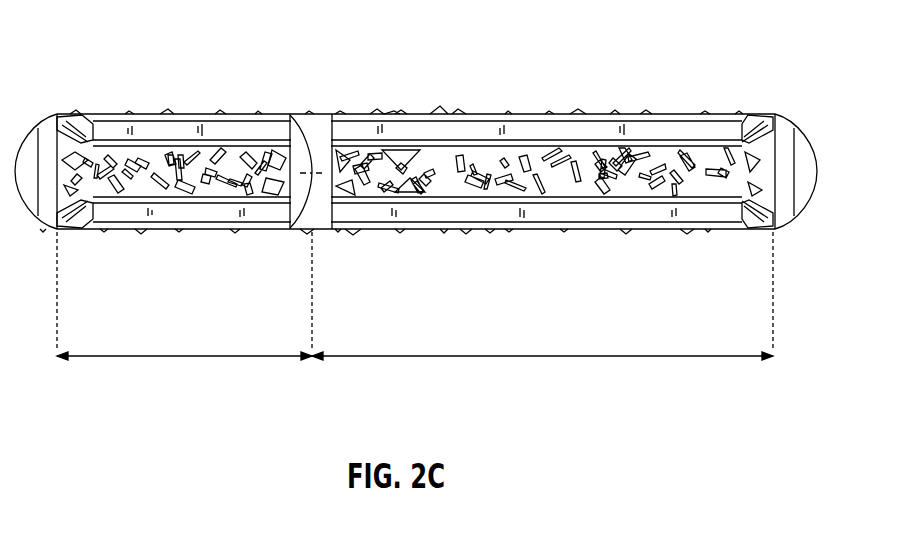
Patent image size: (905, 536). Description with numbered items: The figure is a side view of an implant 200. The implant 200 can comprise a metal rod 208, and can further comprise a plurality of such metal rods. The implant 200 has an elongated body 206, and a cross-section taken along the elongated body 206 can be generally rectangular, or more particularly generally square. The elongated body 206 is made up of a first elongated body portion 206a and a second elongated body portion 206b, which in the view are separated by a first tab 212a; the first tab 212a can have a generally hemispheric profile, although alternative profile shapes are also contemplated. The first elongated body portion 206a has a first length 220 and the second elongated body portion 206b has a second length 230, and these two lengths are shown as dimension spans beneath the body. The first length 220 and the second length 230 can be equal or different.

The implant 200 is at (777, 100).
The elongated body 206 is at (465, 100).
The first elongated body portion 206a is at (206, 185).
The second elongated body portion 206b is at (650, 180).
The metal rod 208 is at (653, 120).
The first tab 212a is at (294, 212).
The first length 220 is at (185, 358).
The second length 230 is at (545, 358).